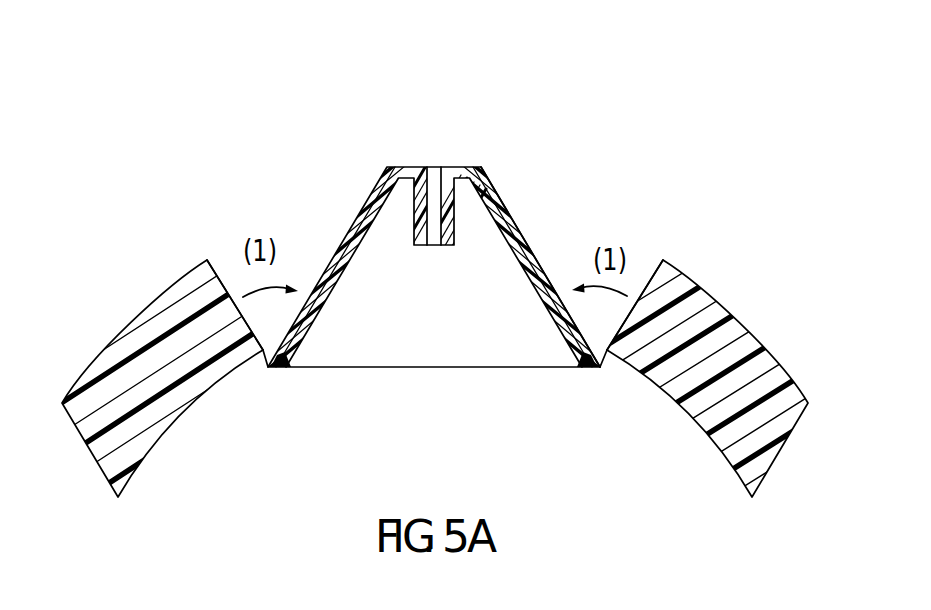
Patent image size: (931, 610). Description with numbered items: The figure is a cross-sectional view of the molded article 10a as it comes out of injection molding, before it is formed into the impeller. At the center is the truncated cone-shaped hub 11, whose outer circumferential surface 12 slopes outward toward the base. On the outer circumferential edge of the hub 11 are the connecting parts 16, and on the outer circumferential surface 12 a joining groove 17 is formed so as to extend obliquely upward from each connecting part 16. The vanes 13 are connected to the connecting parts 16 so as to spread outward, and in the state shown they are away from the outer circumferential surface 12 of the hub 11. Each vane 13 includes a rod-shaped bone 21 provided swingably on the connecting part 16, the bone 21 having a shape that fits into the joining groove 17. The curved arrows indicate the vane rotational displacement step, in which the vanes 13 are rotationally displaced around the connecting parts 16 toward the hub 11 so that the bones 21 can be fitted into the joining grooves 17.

The molded article 10a is at (257, 88).
The hub 11 is at (497, 172).
The outer circumferential surface 12 is at (511, 214).
The vane 13 is at (139, 316).
The connecting part 16 is at (274, 369).
The joining groove 17 is at (326, 284).
The bone 21 is at (219, 269).